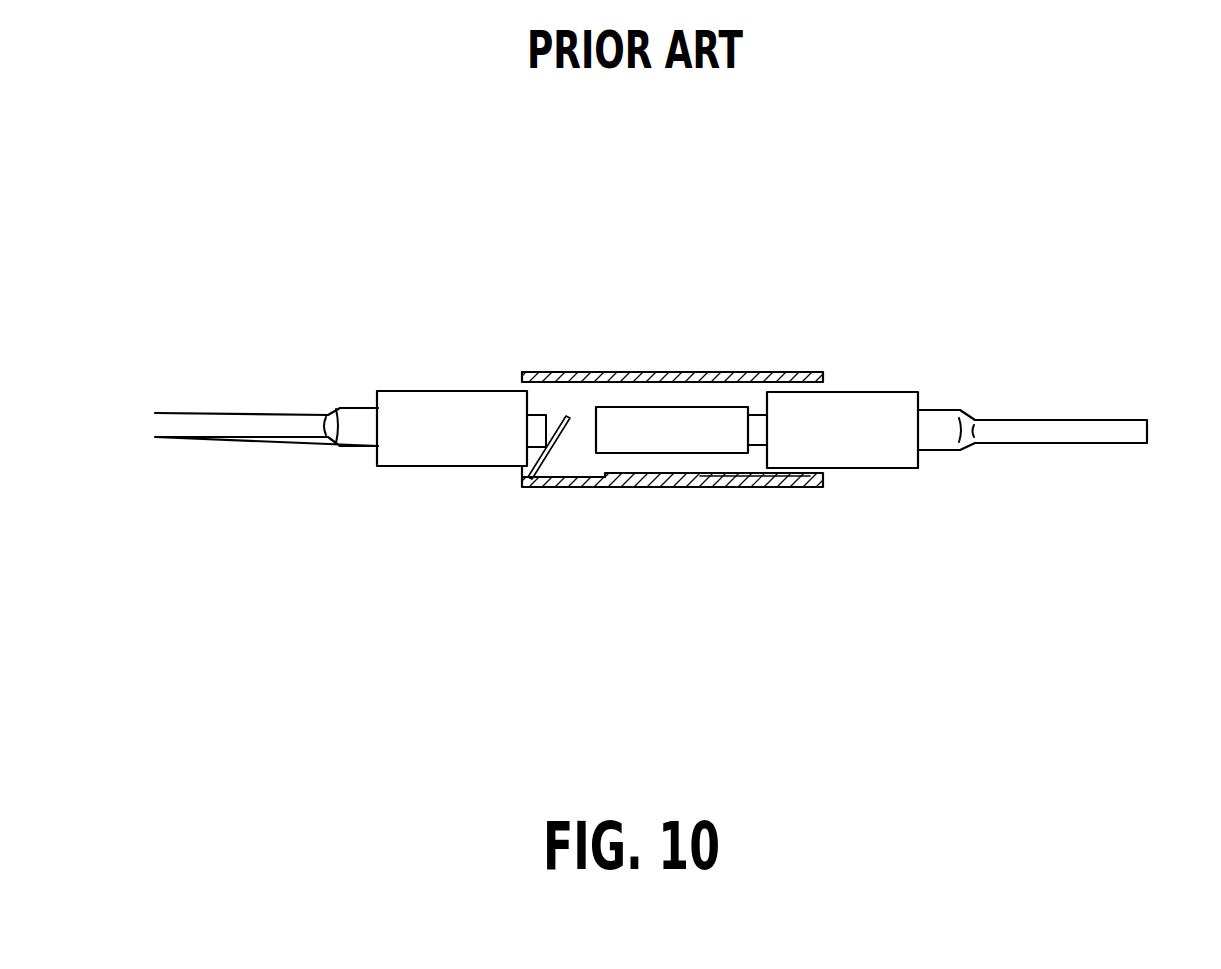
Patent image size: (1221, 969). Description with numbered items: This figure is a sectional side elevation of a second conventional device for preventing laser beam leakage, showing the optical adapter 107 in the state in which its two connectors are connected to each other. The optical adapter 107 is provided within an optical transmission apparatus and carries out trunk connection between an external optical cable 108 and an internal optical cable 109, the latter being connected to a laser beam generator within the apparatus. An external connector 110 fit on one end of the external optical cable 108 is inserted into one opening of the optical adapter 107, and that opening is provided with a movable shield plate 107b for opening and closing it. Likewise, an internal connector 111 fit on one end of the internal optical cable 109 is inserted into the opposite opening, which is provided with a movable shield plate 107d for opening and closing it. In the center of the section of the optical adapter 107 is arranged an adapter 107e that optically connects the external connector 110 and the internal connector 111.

The optical adapter 107 is at (692, 374).
The movable shield plate 107b is at (548, 462).
The movable shield plate 107d is at (760, 474).
The adapter 107e is at (632, 425).
The external optical cable 108 is at (232, 430).
The internal optical cable 109 is at (1062, 430).
The external connector 110 is at (433, 450).
The internal connector 111 is at (877, 458).